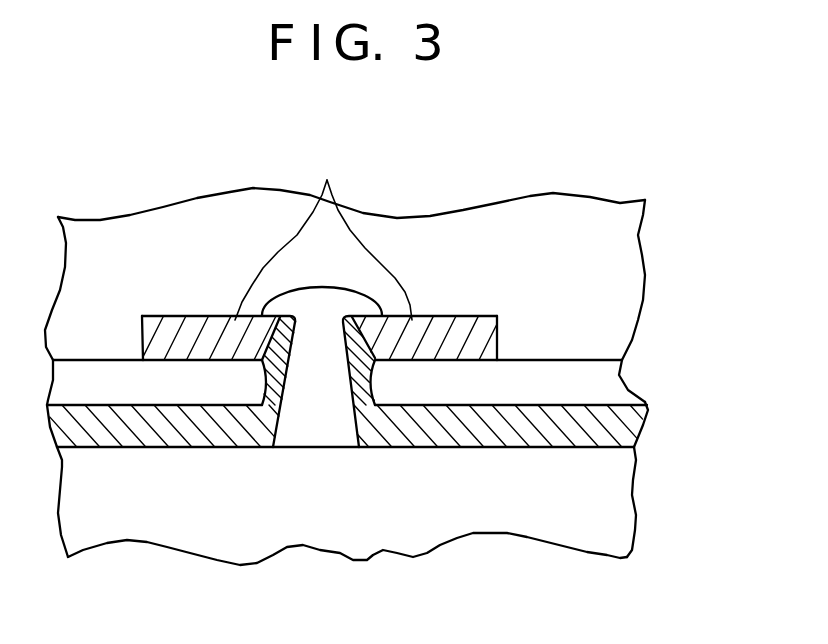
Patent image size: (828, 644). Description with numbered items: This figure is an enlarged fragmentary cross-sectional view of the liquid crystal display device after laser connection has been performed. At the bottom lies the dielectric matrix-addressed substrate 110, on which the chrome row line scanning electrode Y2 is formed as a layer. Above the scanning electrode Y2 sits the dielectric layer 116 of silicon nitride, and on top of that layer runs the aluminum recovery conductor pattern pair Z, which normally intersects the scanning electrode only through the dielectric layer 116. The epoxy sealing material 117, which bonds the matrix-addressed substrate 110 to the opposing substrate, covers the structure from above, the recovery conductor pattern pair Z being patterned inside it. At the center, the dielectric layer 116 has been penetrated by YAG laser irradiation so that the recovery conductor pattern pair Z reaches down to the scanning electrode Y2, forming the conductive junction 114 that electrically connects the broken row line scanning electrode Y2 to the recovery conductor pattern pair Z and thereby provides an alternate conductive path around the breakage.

The matrix-addressed substrate 110 is at (622, 492).
The conductive junction 114 is at (310, 444).
The dielectric layer 116 is at (612, 383).
The sealing material 117 is at (622, 272).
The row line scanning electrode Y2 is at (632, 420).
The recovery conductor pattern pair Z is at (323, 233).